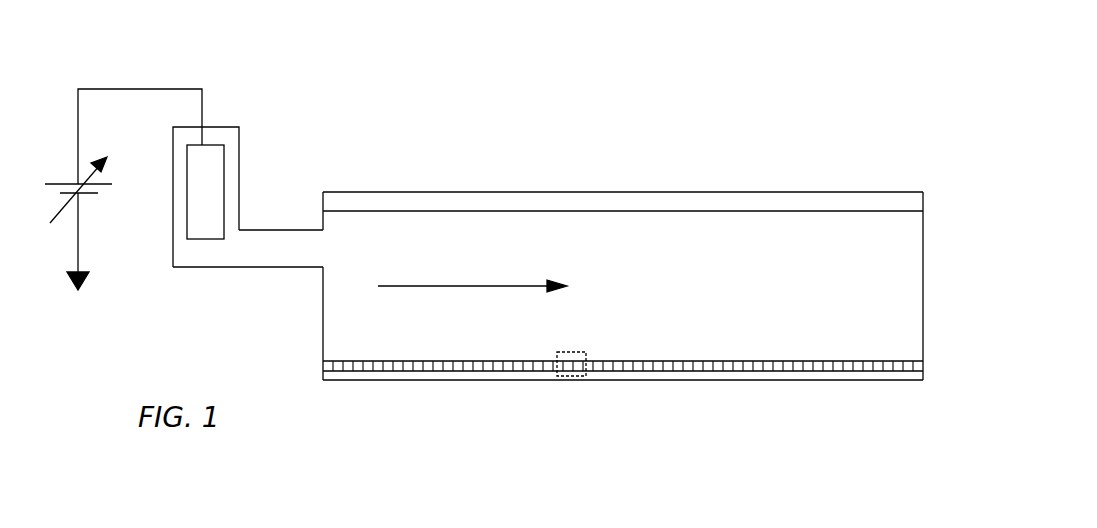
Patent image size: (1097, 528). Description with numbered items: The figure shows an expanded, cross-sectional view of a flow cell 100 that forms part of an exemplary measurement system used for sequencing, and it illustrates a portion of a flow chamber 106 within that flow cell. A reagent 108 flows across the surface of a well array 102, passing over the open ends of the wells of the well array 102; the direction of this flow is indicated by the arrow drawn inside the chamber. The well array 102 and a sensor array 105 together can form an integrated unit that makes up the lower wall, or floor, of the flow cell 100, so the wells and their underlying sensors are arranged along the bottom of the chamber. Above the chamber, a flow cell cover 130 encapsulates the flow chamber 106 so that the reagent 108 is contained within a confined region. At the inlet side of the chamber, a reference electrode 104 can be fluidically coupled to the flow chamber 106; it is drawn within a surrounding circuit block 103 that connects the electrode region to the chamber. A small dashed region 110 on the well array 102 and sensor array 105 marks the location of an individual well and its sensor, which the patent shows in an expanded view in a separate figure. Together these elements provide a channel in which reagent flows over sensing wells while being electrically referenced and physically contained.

The flow cell 100 is at (633, 60).
The well array 102 is at (848, 372).
The control circuit 103 is at (267, 253).
The reference electrode 104 is at (224, 172).
The sensor array 105 is at (792, 380).
The flow chamber 106 is at (720, 233).
The reagent 108 is at (435, 286).
The well and sensor region 110 is at (575, 377).
The flow cell cover 130 is at (882, 202).